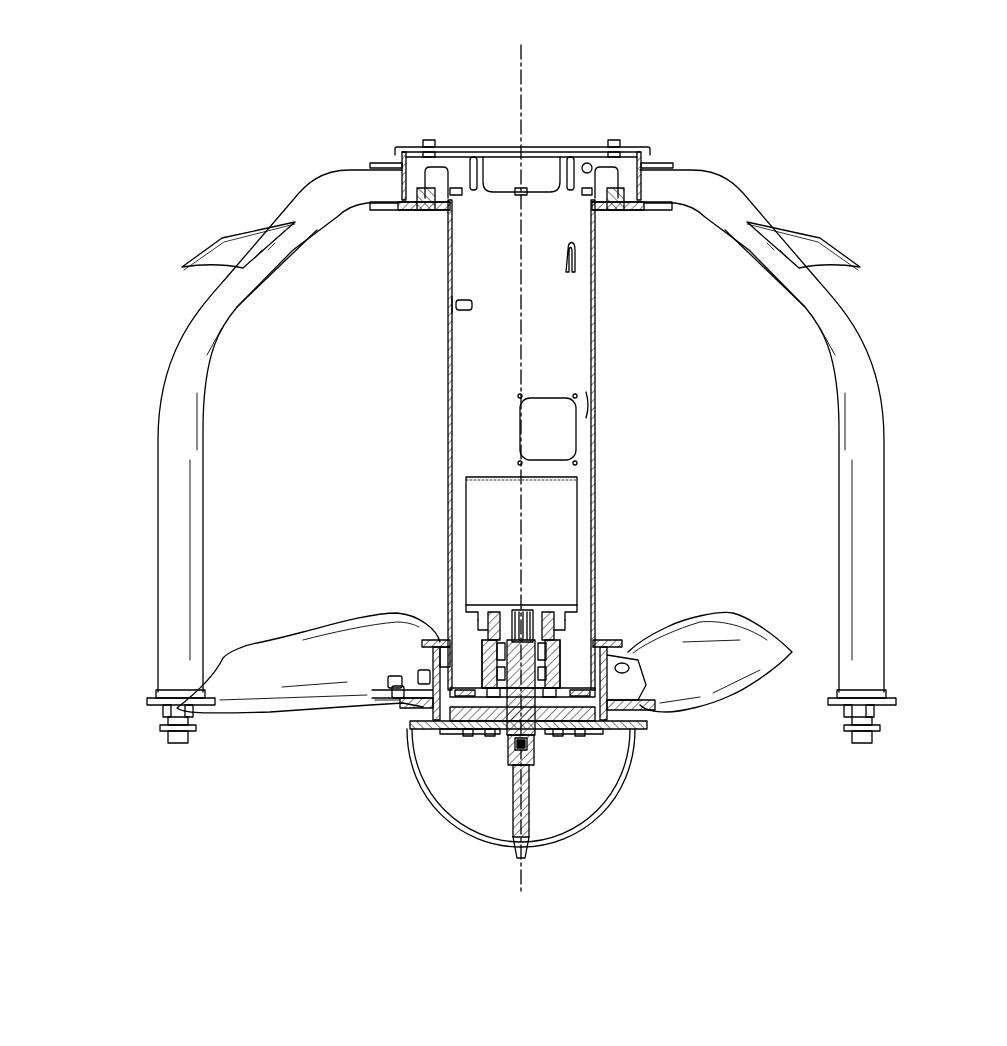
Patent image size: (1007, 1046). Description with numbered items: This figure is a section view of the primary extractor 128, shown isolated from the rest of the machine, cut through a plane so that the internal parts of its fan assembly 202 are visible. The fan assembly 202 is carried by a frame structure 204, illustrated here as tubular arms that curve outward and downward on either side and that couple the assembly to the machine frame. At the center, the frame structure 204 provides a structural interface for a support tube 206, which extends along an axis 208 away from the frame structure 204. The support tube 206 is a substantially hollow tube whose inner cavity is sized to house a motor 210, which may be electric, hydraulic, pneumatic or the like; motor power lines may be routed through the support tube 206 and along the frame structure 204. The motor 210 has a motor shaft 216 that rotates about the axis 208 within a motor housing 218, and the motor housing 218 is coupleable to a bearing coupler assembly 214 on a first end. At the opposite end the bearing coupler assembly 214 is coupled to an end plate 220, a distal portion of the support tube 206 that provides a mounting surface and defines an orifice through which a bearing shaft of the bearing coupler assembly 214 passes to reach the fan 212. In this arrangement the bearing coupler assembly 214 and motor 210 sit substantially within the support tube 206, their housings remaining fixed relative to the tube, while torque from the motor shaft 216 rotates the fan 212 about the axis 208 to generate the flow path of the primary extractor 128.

The primary extractor 128 is at (895, 126).
The fan assembly 202 is at (384, 595).
The frame structure 204 is at (178, 383).
The support tube 206 is at (597, 326).
The axis 208 is at (519, 62).
The motor 210 is at (553, 507).
The fan 212 is at (706, 680).
The bearing coupler assembly 214 is at (575, 632).
The motor shaft 216 is at (525, 608).
The motor housing 218 is at (466, 490).
The end plate 220 is at (480, 735).